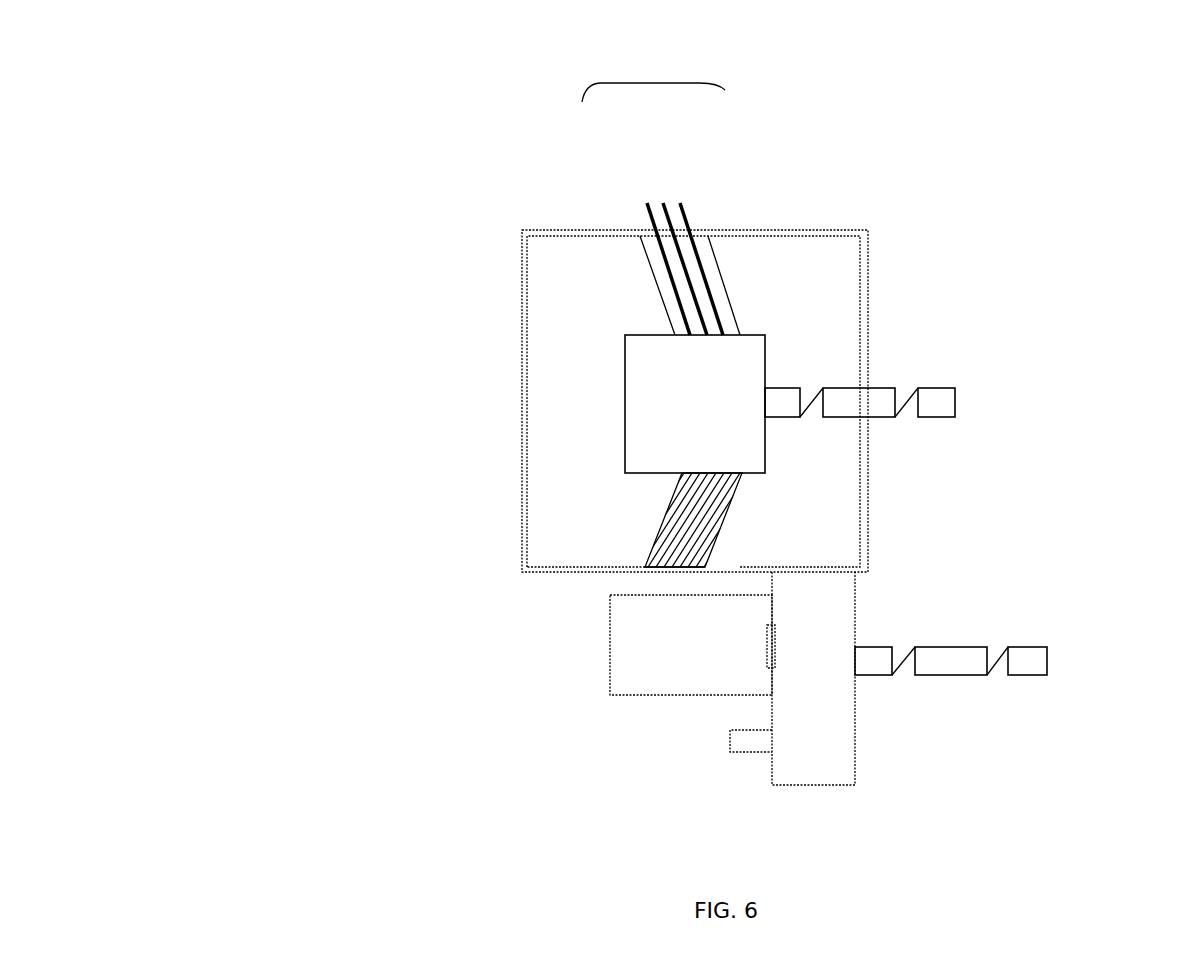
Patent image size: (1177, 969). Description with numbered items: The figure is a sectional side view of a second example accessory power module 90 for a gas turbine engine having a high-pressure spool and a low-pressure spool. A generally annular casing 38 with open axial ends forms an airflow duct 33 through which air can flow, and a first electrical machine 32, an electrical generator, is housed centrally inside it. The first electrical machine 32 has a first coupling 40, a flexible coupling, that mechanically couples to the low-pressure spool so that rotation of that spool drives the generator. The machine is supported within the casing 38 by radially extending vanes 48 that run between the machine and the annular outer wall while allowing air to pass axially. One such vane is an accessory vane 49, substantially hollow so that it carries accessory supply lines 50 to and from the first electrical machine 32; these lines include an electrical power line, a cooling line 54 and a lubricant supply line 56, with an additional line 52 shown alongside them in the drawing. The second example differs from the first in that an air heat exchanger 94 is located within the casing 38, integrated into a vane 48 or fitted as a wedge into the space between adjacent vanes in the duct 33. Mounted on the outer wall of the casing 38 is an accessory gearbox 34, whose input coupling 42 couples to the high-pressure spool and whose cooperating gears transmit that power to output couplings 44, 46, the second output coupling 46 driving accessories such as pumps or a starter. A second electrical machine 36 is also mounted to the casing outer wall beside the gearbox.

The second example accessory power module 90 is at (128, 121).
The casing 38 is at (522, 492).
The airflow duct 33 is at (693, 401).
The accessory vane 49 is at (657, 288).
The accessory supply lines 50 is at (651, 82).
The first cable 52 is at (647, 205).
The cooling line 54 is at (670, 205).
The lubricant supply line 56 is at (687, 210).
The first electrical machine 32 is at (695, 404).
The first coupling 40 is at (867, 402).
The vanes 48 is at (740, 527).
The air heat exchanger 94 is at (645, 550).
The accessory gearbox 34 is at (813, 678).
The second electrical machine 36 is at (691, 645).
The output coupling 44 is at (765, 662).
The second output coupling 46 is at (733, 737).
The input coupling 42 is at (1033, 665).